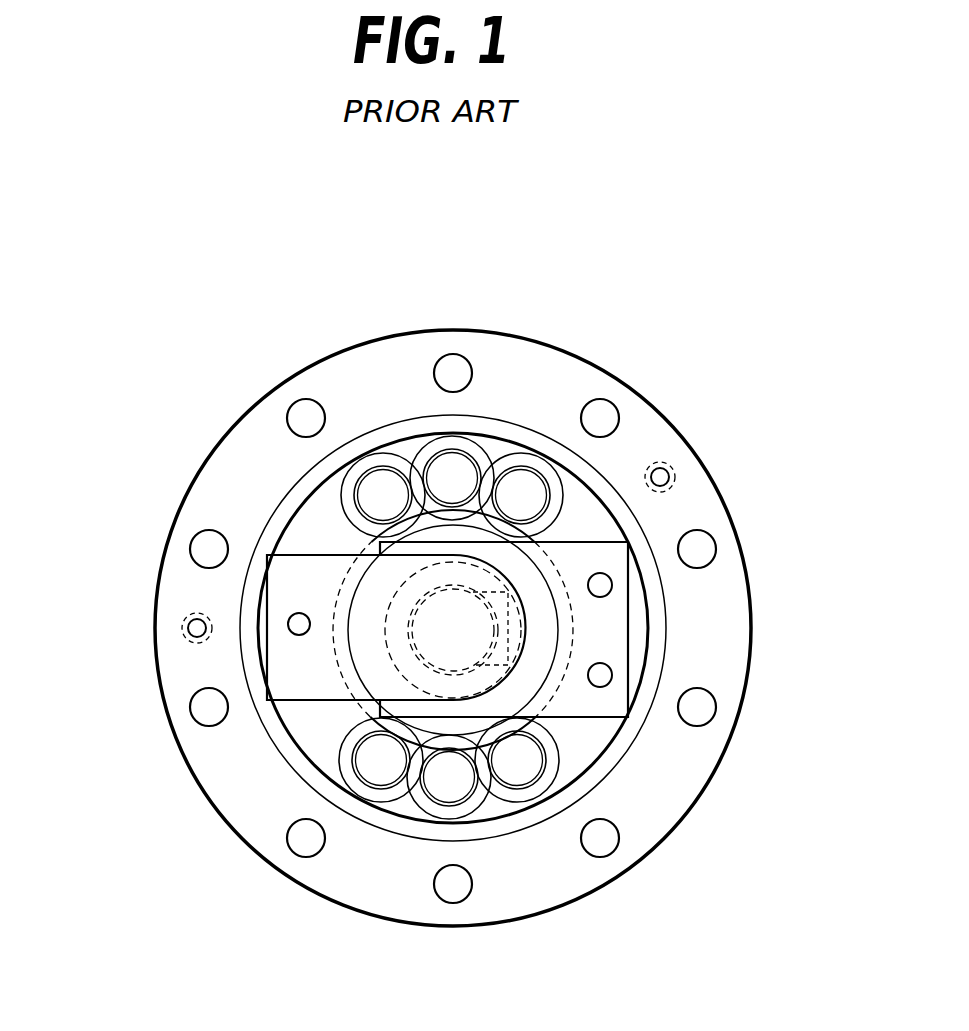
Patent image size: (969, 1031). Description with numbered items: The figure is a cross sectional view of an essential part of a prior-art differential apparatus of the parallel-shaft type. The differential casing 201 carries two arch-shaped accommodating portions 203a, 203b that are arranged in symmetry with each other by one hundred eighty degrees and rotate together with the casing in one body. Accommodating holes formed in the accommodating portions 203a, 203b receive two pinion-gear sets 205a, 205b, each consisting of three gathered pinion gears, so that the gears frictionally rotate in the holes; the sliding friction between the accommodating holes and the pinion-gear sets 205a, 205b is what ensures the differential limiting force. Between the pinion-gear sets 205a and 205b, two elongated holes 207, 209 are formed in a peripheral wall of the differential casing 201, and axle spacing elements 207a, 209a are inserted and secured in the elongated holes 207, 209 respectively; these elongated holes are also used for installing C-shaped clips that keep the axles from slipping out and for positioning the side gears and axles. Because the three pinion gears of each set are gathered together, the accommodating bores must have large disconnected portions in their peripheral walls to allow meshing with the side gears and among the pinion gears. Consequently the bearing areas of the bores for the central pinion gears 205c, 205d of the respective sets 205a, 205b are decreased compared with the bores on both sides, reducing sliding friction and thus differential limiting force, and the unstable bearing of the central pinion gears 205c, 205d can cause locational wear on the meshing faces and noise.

The differential casing 201 is at (596, 368).
The accommodating portion 203a is at (318, 500).
The accommodating portion 203b is at (582, 745).
The pinion-gear set 205a is at (365, 388).
The pinion-gear set 205b is at (355, 845).
The central pinion gear 205c is at (462, 440).
The central pinion gear 205d is at (478, 832).
The elongated hole 207 is at (265, 598).
The axle spacing element 207a is at (292, 668).
The elongated hole 209 is at (645, 622).
The axle spacing element 209a is at (620, 685).